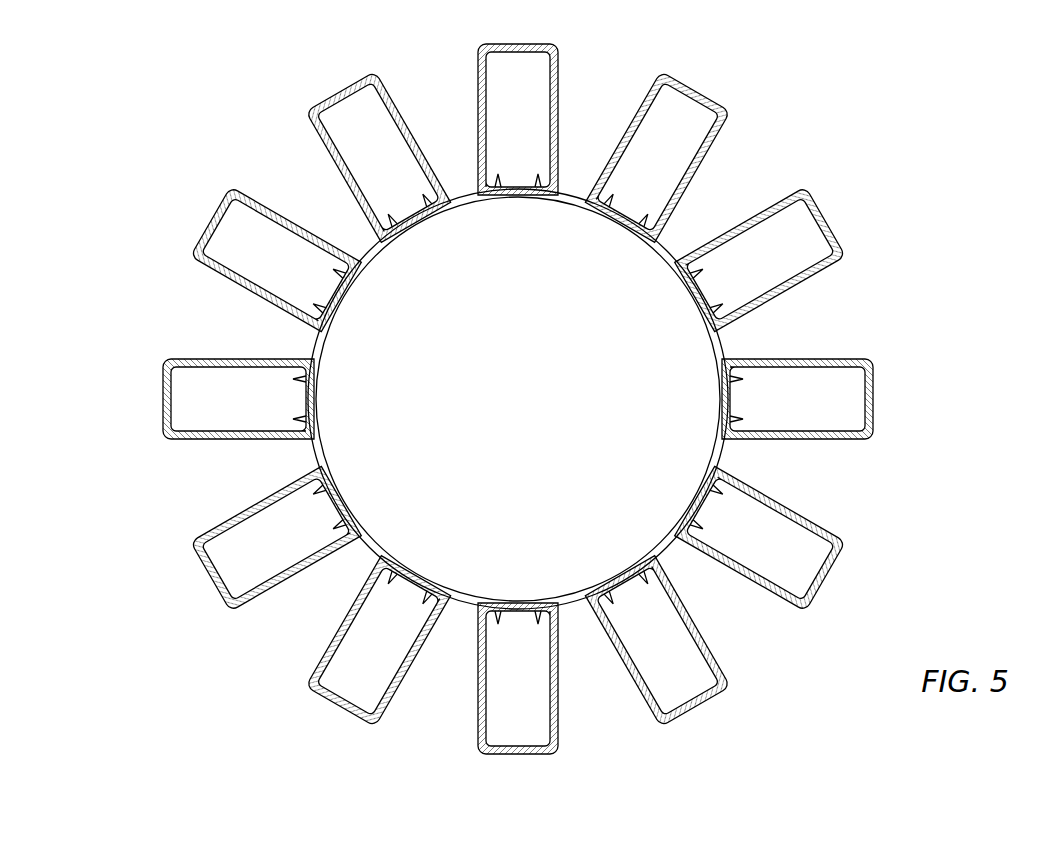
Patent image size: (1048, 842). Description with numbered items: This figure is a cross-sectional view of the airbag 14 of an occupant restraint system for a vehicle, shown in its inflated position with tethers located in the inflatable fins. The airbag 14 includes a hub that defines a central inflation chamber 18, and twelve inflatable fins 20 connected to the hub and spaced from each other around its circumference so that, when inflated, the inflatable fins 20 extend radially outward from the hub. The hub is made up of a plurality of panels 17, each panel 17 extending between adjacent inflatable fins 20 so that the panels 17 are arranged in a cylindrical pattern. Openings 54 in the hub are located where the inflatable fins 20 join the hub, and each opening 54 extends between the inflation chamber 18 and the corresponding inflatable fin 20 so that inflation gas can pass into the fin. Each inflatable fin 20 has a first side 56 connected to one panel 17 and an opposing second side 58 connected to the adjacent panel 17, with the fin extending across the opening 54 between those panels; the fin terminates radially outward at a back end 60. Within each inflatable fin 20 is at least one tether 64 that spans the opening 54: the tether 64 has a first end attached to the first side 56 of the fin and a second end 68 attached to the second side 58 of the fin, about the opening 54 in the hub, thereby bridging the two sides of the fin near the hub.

The airbag 14 is at (213, 137).
The panel 17 is at (470, 195).
The inflation chamber 18 is at (780, 318).
The inflatable fin 20 is at (487, 43).
The opening 54 is at (518, 207).
The first side 56 is at (480, 120).
The second side 58 is at (557, 90).
The back end 60 is at (537, 43).
The tether 64 is at (518, 185).
The second end 68 is at (495, 192).